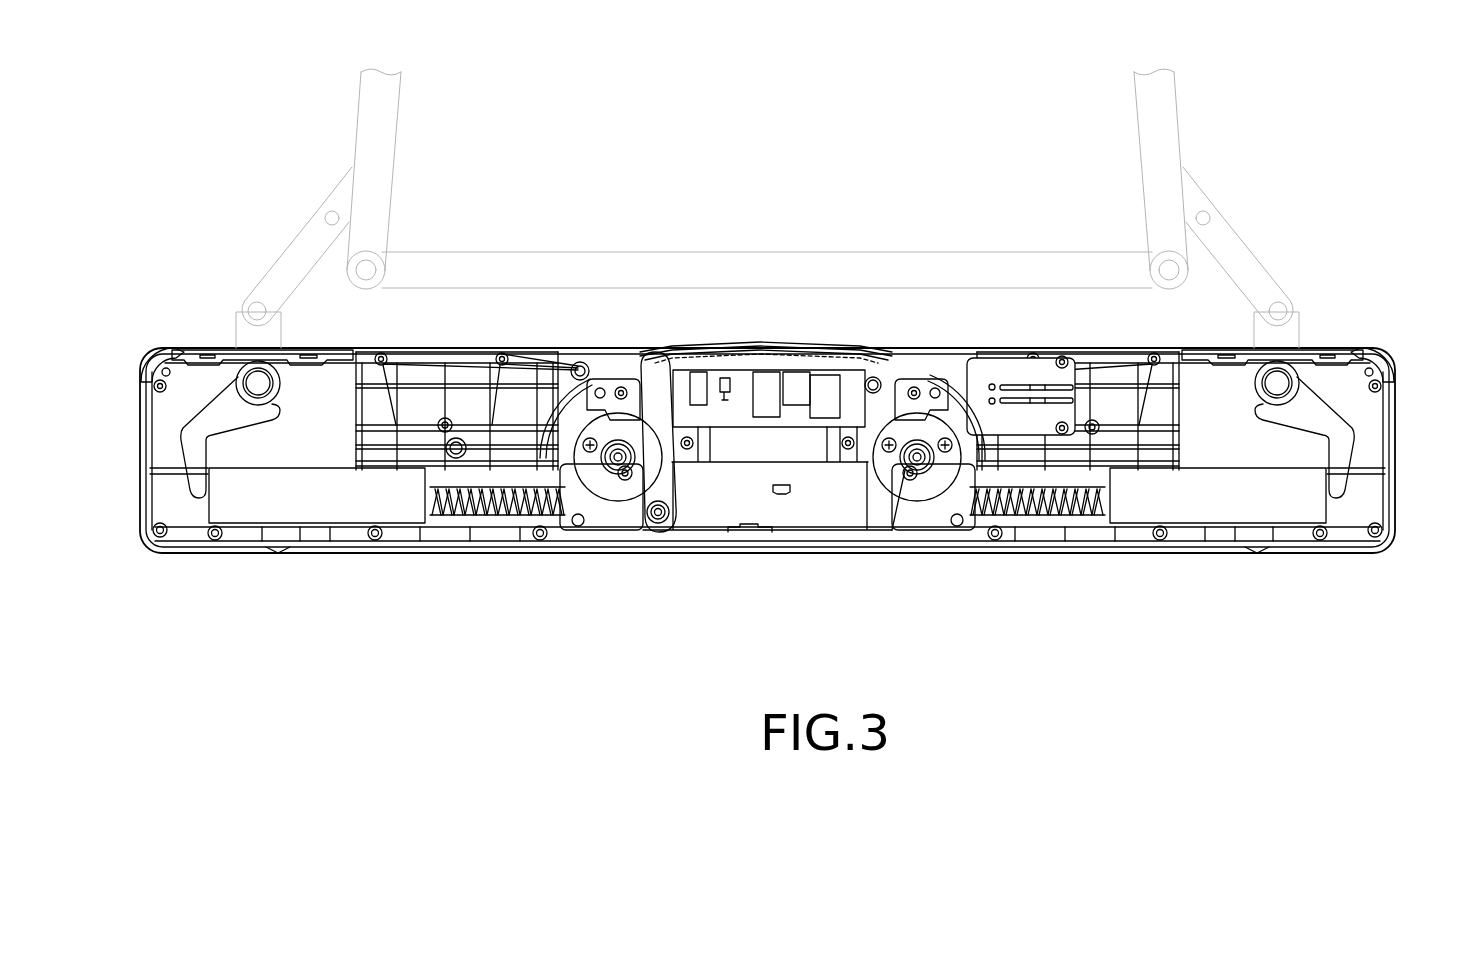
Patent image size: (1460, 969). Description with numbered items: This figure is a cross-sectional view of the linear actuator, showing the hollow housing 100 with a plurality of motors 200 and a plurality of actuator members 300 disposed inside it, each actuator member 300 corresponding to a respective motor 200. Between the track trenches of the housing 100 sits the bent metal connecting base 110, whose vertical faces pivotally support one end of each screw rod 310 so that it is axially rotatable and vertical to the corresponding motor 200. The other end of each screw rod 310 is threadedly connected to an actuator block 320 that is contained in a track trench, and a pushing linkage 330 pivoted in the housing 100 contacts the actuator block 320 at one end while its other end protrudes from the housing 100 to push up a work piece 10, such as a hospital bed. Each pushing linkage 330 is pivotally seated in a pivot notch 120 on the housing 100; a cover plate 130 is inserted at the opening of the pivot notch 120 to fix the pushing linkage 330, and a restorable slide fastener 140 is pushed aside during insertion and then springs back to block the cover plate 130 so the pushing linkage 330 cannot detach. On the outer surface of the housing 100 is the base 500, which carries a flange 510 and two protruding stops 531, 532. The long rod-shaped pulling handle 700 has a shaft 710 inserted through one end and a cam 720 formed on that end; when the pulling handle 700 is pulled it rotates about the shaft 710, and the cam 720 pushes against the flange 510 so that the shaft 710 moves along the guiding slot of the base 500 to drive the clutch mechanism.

The work piece 10 is at (372, 118).
The housing 100 is at (942, 560).
The connecting base 110 is at (773, 440).
The pivot notch 120 is at (237, 372).
The cover plate 130 is at (202, 372).
The slide fastener 140 is at (152, 363).
The motor 200 is at (612, 410).
The actuator member 300 is at (470, 627).
The screw rod 310 is at (470, 495).
The actuator block 320 is at (325, 510).
The pushing linkage 330 is at (225, 420).
The base 500 is at (849, 530).
The flange 510 is at (637, 522).
The stop 531 is at (786, 494).
The stop 532 is at (753, 527).
The pulling handle 700 is at (662, 392).
The shaft 710 is at (669, 518).
The cam 720 is at (662, 530).